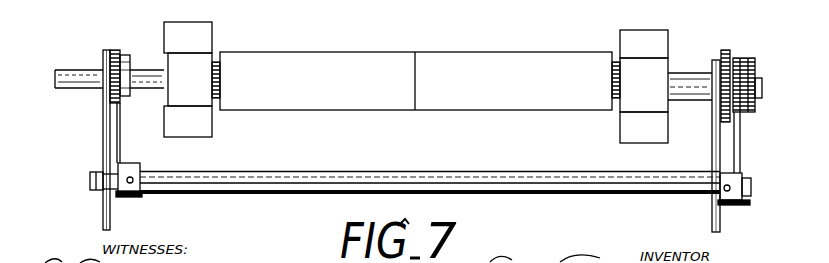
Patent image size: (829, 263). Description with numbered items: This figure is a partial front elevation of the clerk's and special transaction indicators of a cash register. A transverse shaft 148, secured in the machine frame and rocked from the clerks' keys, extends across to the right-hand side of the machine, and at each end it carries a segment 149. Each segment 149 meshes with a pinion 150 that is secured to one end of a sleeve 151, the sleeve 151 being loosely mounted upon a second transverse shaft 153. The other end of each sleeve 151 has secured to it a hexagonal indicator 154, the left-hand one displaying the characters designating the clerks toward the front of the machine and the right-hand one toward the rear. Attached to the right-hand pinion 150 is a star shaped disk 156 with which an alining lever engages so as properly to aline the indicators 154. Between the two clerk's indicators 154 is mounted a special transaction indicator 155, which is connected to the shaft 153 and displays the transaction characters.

The transverse shaft 148 is at (305, 171).
The segment 149 is at (121, 150).
The pinion 150 is at (116, 56).
The sleeve 151 is at (155, 68).
The transverse shaft 153 is at (76, 48).
The hexagonal indicator 154 is at (190, 22).
The special transaction indicator 155 is at (441, 52).
The star shaped disk 156 is at (730, 51).